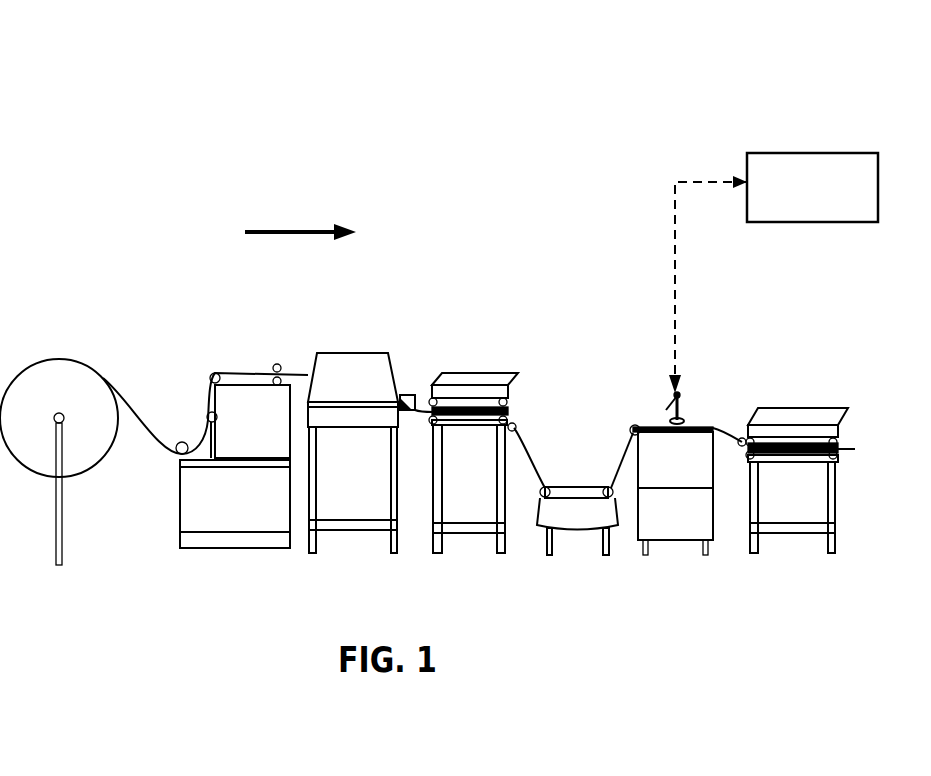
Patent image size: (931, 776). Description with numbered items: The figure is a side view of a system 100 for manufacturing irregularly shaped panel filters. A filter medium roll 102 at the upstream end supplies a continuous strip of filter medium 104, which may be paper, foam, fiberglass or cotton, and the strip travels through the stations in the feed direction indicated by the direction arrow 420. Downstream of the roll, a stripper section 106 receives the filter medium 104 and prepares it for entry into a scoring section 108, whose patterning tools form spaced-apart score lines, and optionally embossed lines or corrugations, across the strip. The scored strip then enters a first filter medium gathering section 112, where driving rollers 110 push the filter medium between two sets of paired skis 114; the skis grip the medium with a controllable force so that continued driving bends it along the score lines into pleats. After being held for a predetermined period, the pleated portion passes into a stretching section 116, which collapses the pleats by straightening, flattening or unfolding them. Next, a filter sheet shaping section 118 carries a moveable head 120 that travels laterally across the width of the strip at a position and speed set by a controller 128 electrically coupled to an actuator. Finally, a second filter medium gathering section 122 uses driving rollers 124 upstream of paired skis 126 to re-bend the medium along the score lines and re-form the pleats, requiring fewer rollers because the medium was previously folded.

The system for manufacturing irregularly shaped panel filters 100 is at (153, 62).
The filter medium roll 102 is at (62, 359).
The filter medium 104 is at (157, 443).
The stripper section 106 is at (182, 442).
The scoring section 108 is at (342, 353).
The driving rollers 110 is at (413, 393).
The first filter medium gathering section 112 is at (470, 403).
The paired skis 114 is at (475, 400).
The stretching section 116 is at (578, 486).
The filter sheet shaping section 118 is at (660, 450).
The moveable head 120 is at (682, 395).
The second filter medium gathering section 122 is at (775, 418).
The driving rollers 124 is at (744, 456).
The paired skis 126 is at (798, 442).
The controller 128 is at (833, 212).
The feed direction arrow 420 is at (290, 230).